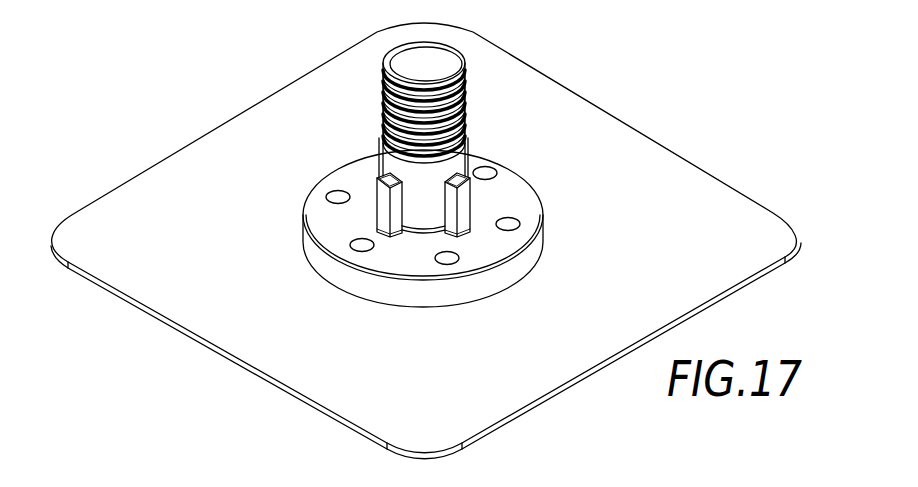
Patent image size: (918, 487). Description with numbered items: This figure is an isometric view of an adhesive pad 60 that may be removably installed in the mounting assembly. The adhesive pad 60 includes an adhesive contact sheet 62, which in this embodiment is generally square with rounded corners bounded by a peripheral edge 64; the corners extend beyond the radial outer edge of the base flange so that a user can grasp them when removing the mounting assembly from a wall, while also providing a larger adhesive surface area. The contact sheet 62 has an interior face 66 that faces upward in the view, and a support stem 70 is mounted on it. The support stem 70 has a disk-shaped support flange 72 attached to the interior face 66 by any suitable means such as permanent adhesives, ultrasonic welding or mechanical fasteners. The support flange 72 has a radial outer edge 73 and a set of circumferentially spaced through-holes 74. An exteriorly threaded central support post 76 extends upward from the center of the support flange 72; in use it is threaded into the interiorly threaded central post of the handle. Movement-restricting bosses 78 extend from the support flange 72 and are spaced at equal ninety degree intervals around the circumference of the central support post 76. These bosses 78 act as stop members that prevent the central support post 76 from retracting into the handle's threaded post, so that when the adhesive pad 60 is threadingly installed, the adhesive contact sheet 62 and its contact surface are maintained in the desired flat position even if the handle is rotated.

The adhesive pad 60 is at (200, 108).
The adhesive contact sheet 62 is at (90, 228).
The peripheral edge 64 is at (123, 294).
The interior face 66 is at (233, 240).
The support stem 70 is at (465, 147).
The support flange 72 is at (526, 209).
The radial outer edge 73 is at (525, 263).
The through-holes 74 is at (509, 225).
The central support post 76 is at (443, 100).
The movement-restricting bosses 78 is at (381, 200).